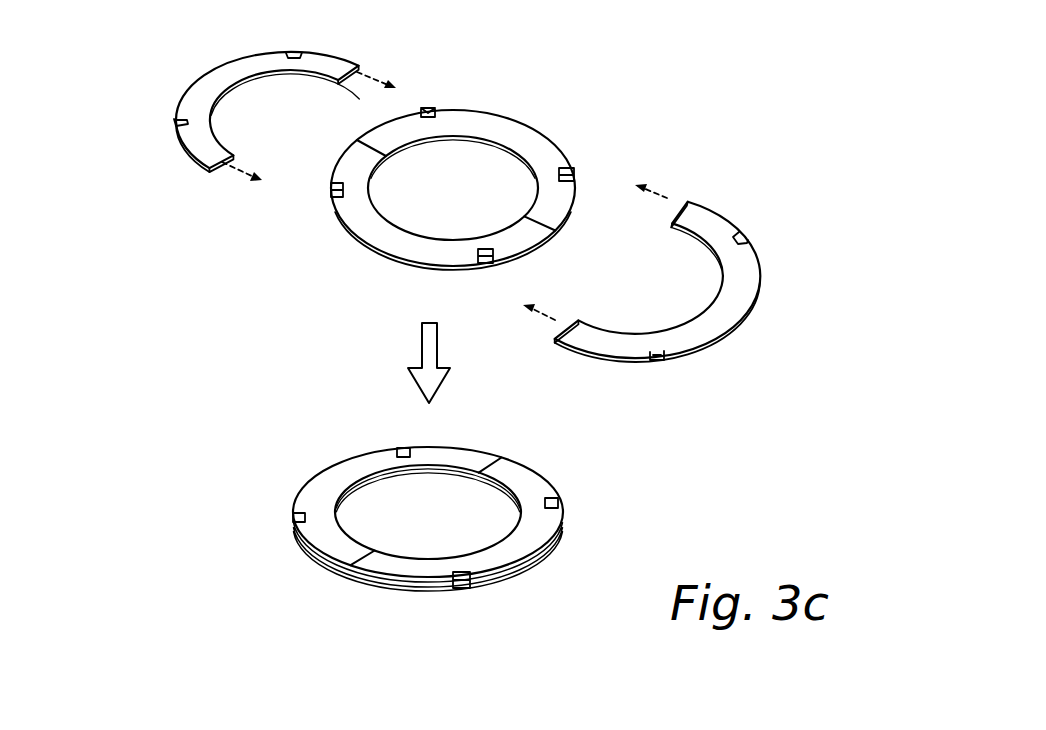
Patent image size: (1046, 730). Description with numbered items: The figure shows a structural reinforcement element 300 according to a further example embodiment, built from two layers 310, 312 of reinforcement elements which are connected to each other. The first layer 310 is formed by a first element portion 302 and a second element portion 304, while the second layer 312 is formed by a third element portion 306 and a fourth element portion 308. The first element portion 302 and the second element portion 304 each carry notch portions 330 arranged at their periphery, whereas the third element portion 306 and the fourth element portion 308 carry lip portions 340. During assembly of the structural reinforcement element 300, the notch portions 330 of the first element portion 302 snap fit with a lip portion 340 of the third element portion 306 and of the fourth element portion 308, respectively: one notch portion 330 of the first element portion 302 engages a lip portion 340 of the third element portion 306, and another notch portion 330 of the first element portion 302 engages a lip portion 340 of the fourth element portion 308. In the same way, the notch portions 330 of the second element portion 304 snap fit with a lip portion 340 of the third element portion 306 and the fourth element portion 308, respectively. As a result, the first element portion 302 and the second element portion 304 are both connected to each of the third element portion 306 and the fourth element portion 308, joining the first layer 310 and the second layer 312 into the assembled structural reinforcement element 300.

The structural reinforcement element 300 is at (682, 100).
The first element portion 302 is at (218, 78).
The second element portion 304 is at (728, 308).
The third element portion 306 is at (517, 136).
The fourth element portion 308 is at (398, 240).
The first layer 310 is at (345, 477).
The second layer 312 is at (500, 582).
The notch portion 330 is at (312, 38).
The lip portion 340 is at (430, 112).